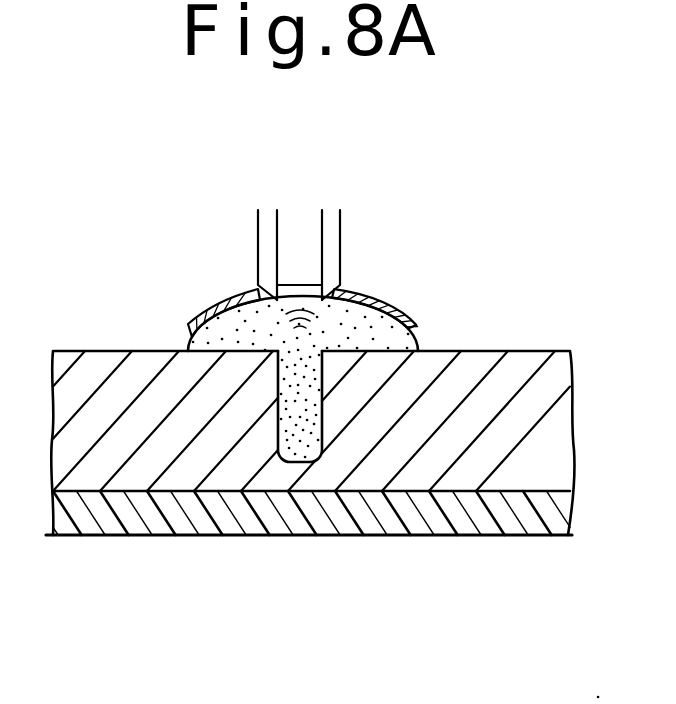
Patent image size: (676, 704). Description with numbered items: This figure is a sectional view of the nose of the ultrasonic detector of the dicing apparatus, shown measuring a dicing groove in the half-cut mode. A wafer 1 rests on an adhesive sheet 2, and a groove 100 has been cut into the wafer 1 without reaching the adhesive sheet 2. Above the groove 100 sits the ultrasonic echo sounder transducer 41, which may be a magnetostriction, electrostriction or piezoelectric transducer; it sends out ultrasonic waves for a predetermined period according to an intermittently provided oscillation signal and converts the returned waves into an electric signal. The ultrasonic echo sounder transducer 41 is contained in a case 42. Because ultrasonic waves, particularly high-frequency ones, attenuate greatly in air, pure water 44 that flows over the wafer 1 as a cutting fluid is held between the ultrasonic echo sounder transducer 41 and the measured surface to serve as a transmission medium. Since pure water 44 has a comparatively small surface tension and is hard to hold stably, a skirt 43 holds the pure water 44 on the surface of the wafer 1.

The wafer 1 is at (93, 366).
The adhesive sheet 2 is at (160, 525).
The groove 100 is at (300, 463).
The ultrasonic echo sounder transducer 41 is at (310, 284).
The case 42 is at (336, 228).
The skirt 43 is at (412, 316).
The pure water 44 is at (188, 345).